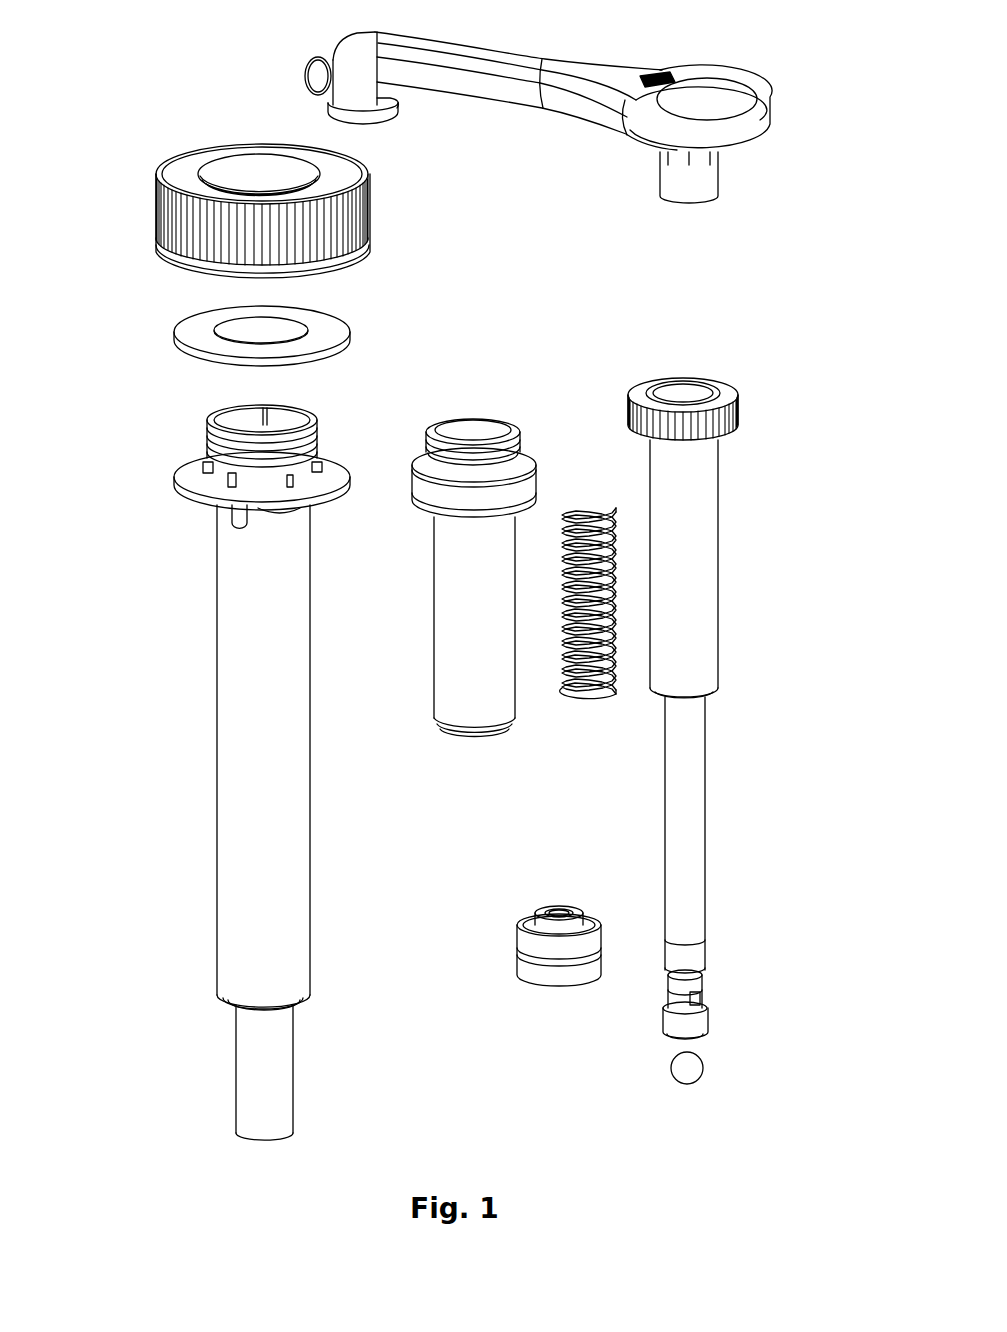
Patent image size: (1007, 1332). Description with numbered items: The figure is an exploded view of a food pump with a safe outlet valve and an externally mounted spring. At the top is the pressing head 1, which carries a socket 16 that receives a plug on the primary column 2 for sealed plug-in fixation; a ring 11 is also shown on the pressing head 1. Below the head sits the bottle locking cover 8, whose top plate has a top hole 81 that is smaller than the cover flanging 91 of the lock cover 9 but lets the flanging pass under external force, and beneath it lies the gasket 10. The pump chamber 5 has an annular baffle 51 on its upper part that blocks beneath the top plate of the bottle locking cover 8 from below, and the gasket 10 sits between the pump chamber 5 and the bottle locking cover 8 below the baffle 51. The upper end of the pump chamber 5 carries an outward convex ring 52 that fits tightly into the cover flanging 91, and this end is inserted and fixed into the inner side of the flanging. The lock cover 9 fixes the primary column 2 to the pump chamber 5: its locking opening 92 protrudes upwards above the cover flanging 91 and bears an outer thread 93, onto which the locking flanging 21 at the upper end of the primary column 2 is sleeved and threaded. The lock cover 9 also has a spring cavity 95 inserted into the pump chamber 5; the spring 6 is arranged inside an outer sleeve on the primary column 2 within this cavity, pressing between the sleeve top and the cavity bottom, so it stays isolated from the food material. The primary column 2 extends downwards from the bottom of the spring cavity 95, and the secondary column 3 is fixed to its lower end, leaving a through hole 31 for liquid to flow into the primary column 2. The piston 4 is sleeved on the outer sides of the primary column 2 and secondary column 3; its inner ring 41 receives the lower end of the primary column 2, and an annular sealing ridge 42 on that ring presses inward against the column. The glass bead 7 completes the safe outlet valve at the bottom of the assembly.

The pressing head 1 is at (507, 132).
The hanging ring 11 is at (347, 90).
The socket 16 is at (693, 183).
The bottle locking cover 8 is at (222, 180).
The top hole 81 is at (248, 155).
The gasket 10 is at (187, 328).
The pump chamber 5 is at (214, 772).
The annular baffle 51 is at (185, 474).
The convex ring 52 is at (207, 440).
The lock cover 9 is at (453, 532).
The cover flanging 91 is at (428, 490).
The locking opening 92 is at (500, 420).
The outer thread 93 is at (440, 415).
The spring cavity 95 is at (472, 597).
The spring 6 is at (613, 638).
The primary column 2 is at (729, 675).
The locking flanging 21 is at (738, 428).
The through hole 31 is at (703, 992).
The secondary column 3 is at (700, 1027).
The glass bead 7 is at (690, 1073).
The piston 4 is at (516, 951).
The inner ring 41 is at (517, 930).
The annular sealing ridge 42 is at (548, 908).